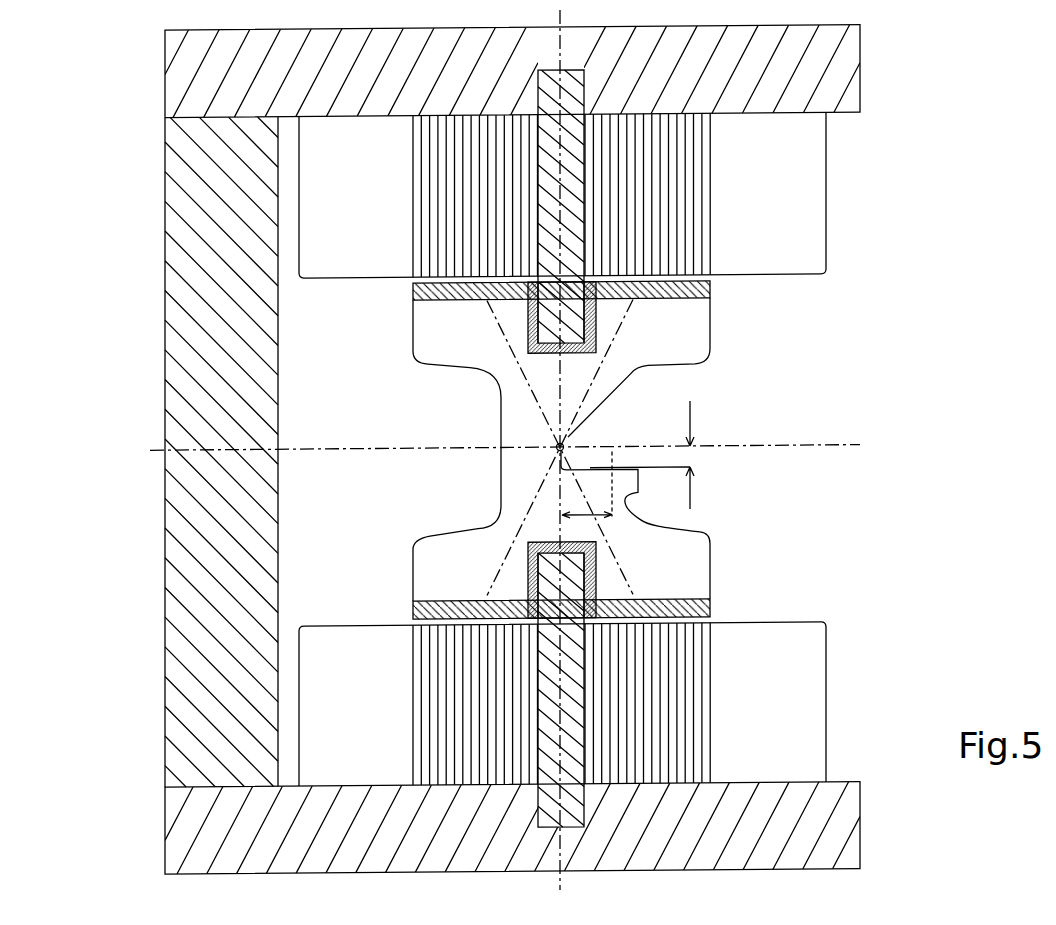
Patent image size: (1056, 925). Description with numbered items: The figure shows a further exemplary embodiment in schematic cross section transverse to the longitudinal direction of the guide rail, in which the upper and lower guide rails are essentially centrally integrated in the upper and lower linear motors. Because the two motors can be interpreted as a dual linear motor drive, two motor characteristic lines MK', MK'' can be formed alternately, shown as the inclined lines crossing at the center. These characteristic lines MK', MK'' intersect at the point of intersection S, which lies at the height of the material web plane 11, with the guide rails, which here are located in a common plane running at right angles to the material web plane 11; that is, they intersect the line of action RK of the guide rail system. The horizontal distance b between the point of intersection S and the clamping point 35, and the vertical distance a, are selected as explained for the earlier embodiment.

The material web plane 11 is at (859, 441).
The line of action of the guide system RK is at (569, 388).
The motor characteristic line MK' is at (510, 447).
The motor characteristic line MK'' is at (663, 447).
The point of intersection S is at (556, 449).
The vertical distance a is at (693, 455).
The horizontal distance b is at (586, 517).
The clamping point 35 is at (613, 473).